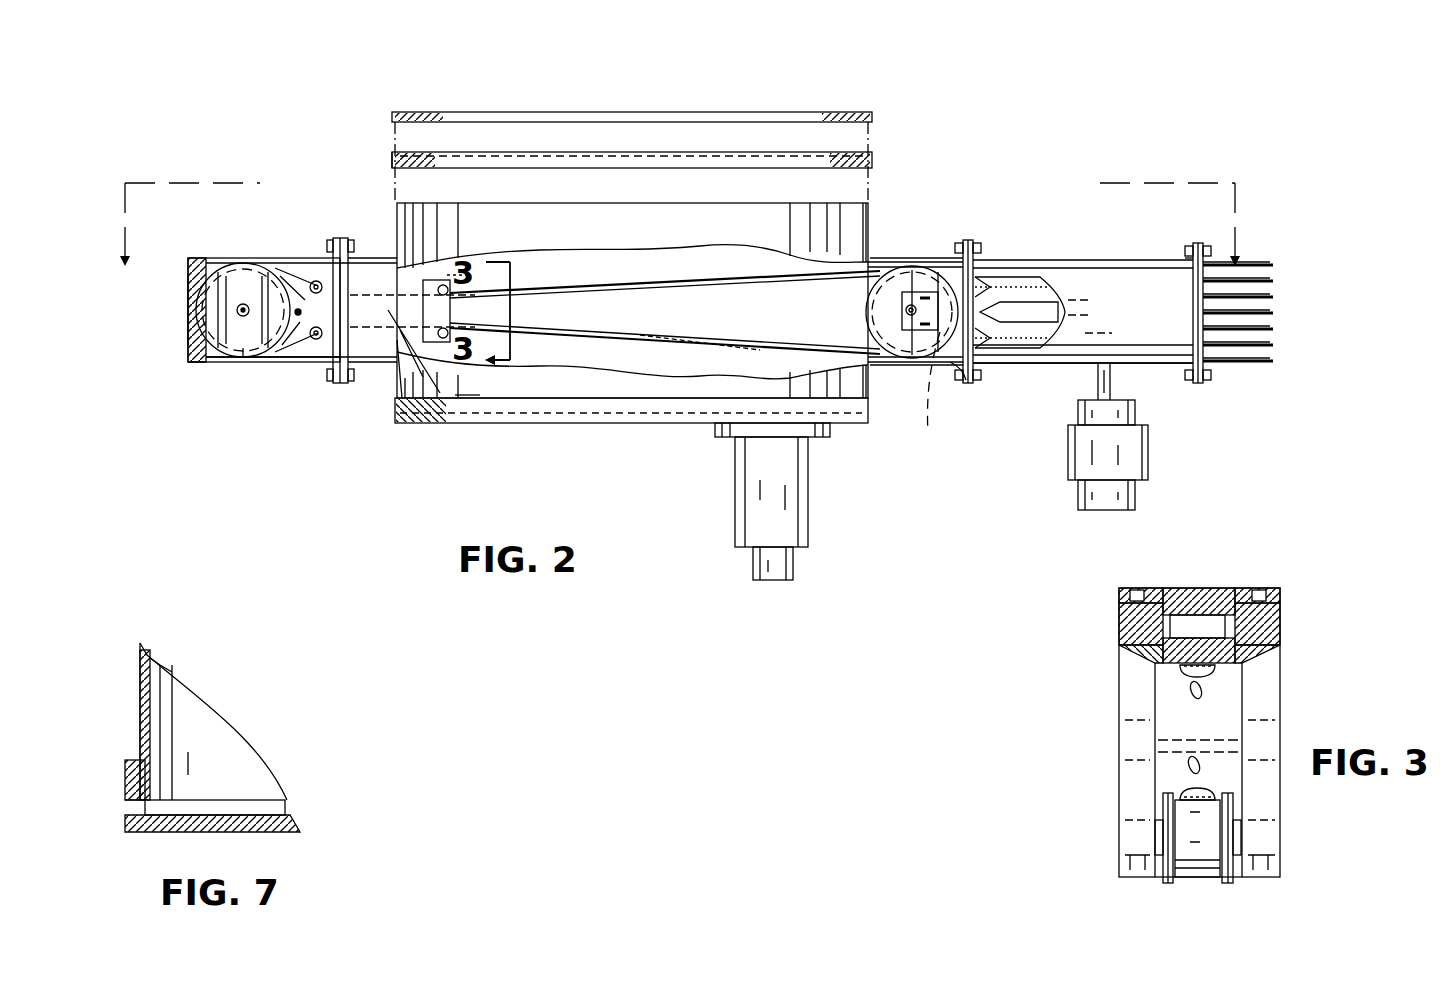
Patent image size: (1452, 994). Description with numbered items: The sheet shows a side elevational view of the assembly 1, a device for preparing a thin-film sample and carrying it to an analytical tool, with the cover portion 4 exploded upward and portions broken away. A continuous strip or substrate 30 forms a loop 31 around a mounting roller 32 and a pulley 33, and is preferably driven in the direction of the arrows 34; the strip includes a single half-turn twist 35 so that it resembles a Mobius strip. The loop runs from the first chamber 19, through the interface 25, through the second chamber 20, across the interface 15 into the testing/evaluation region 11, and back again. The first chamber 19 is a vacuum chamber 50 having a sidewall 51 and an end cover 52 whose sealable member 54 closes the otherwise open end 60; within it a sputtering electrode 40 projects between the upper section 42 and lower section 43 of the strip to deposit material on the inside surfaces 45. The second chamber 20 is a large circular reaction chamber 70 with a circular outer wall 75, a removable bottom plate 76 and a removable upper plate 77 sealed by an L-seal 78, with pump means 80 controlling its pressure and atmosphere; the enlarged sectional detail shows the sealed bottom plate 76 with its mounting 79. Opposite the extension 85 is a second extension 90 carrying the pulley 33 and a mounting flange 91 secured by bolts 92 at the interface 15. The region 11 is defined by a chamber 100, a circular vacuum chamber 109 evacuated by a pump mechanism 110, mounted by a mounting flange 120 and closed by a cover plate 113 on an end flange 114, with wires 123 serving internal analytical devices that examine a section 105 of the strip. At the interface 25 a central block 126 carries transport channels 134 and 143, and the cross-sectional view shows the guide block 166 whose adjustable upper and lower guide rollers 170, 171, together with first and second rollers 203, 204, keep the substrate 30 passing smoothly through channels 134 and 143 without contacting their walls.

In FIG. 2, the assembly 1 is at (952, 150).
In FIG. 2, the cover portion 4 is at (855, 112).
In FIG. 2, the sample testing/evaluation region 11 is at (1070, 255).
In FIG. 2, the interface 15 is at (945, 252).
In FIG. 2, the first chamber 19 is at (226, 256).
In FIG. 2, the second chamber 20 is at (516, 204).
In FIG. 2, the interface 25 is at (342, 248).
In FIG. 2, the substrate 30 is at (722, 285).
In FIG. 3, the substrate 30 is at (1208, 678).
In FIG. 2, the loop 31 is at (782, 347).
In FIG. 2, the mounting roller 32 is at (243, 350).
In FIG. 2, the pulley 33 is at (900, 345).
In FIG. 2, the arrows 34 is at (612, 278).
In FIG. 2, the twist 35 is at (704, 336).
In FIG. 2, the sputtering electrode 40 is at (393, 310).
In FIG. 2, the upper section 42 is at (280, 276).
In FIG. 2, the lower section 43 is at (290, 338).
In FIG. 2, the inside surfaces 45 is at (305, 283).
In FIG. 2, the vacuum chamber 50 is at (215, 262).
In FIG. 2, the sidewall 51 is at (207, 364).
In FIG. 2, the end cover 52 is at (186, 305).
In FIG. 2, the sealable member 54 is at (190, 365).
In FIG. 2, the open end 60 is at (188, 258).
In FIG. 2, the reaction chamber 70 is at (870, 212).
In FIG. 7, the circular outer wall 75 is at (140, 718).
In FIG. 2, the bottom plate 76 is at (404, 424).
In FIG. 7, the bottom plate 76 is at (150, 835).
In FIG. 2, the upper plate 77 is at (540, 112).
In FIG. 2, the L-seal 78 is at (392, 160).
In FIG. 7, the bracket 79 is at (130, 762).
In FIG. 2, the pump means 80 is at (812, 506).
In FIG. 2, the extension 85 is at (386, 256).
In FIG. 2, the second extension 90 is at (885, 268).
In FIG. 2, the mounting flange 91 is at (950, 372).
In FIG. 2, the bolts 92 is at (976, 255).
In FIG. 2, the chamber 100 is at (1050, 358).
In FIG. 2, the section 105 is at (932, 394).
In FIG. 2, the circular vacuum chamber 109 is at (1150, 367).
In FIG. 2, the pump mechanism 110 is at (1150, 452).
In FIG. 2, the cover plate 113 is at (1205, 260).
In FIG. 2, the end flange 114 is at (1185, 258).
In FIG. 2, the mounting flange 120 is at (985, 262).
In FIG. 2, the wires 123 is at (1258, 265).
In FIG. 2, the central block 126 is at (428, 405).
In FIG. 2, the transport channel 134 is at (455, 270).
In FIG. 3, the transport channel 134 is at (1183, 665).
In FIG. 2, the second transport channel 143 is at (466, 400).
In FIG. 3, the second transport channel 143 is at (1183, 796).
In FIG. 3, the guide block 166 is at (1284, 662).
In FIG. 3, the upper guide roller 170 is at (1228, 588).
In FIG. 3, the lower guide roller 171 is at (1230, 884).
In FIG. 3, the first roller 203 is at (1165, 588).
In FIG. 3, the second roller 204 is at (1165, 884).